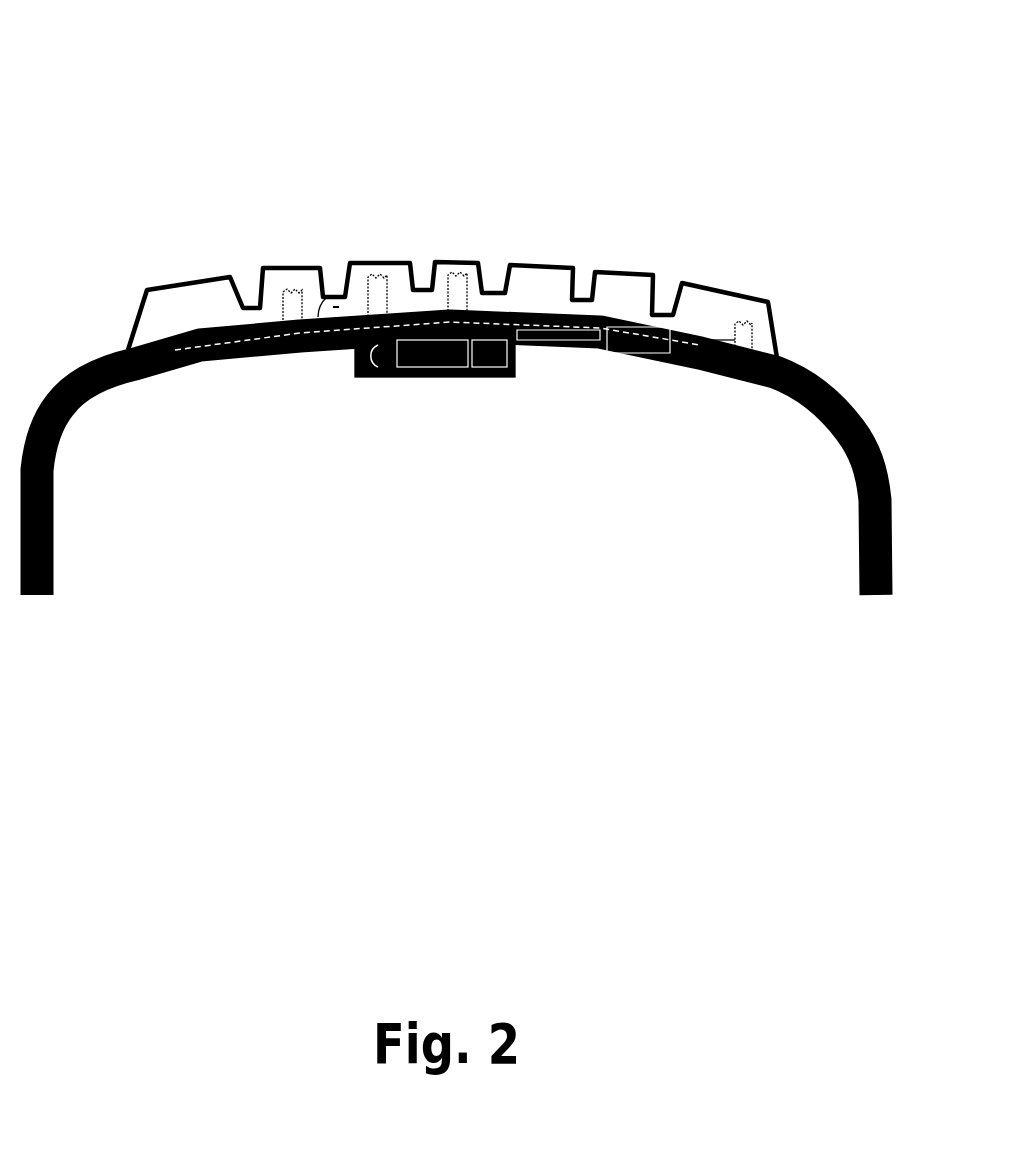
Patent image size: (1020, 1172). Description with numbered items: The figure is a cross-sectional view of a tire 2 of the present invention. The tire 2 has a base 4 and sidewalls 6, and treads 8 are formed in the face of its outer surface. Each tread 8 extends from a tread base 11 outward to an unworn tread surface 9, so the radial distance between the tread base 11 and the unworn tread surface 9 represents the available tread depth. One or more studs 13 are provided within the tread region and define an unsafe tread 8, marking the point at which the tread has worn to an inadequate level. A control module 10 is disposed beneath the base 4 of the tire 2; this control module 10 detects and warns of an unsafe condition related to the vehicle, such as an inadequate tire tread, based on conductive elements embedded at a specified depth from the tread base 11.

The tire 2 is at (388, 80).
The base 4 is at (275, 322).
The sidewalls 6 is at (883, 463).
The treads 8 is at (282, 209).
The unworn tread surface 9 is at (285, 268).
The control module 10 is at (460, 312).
The tread base 11 is at (309, 348).
The studs 13 is at (297, 270).